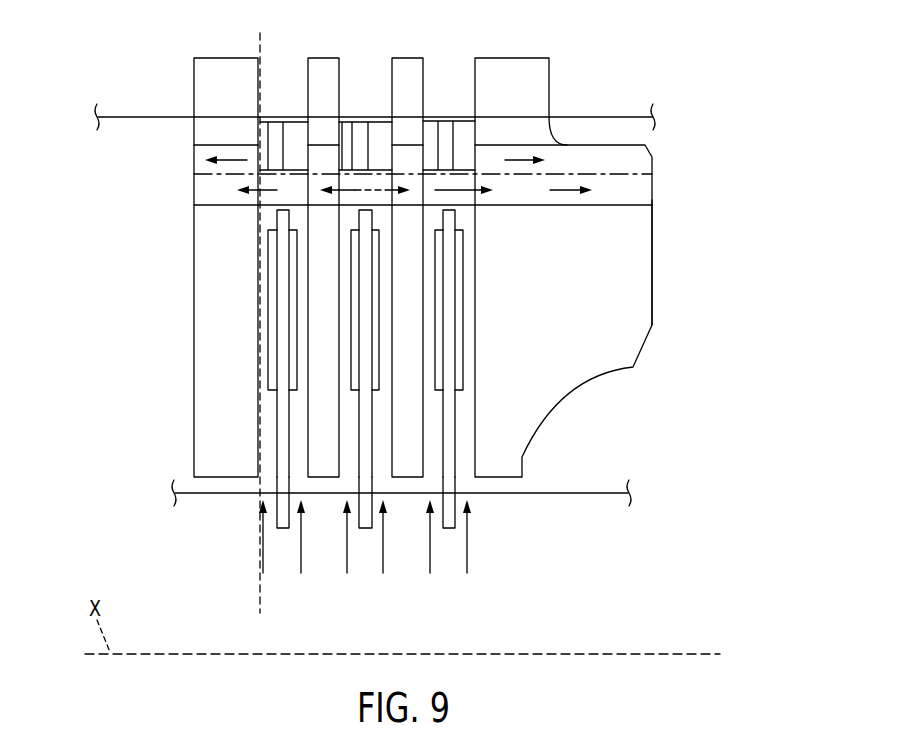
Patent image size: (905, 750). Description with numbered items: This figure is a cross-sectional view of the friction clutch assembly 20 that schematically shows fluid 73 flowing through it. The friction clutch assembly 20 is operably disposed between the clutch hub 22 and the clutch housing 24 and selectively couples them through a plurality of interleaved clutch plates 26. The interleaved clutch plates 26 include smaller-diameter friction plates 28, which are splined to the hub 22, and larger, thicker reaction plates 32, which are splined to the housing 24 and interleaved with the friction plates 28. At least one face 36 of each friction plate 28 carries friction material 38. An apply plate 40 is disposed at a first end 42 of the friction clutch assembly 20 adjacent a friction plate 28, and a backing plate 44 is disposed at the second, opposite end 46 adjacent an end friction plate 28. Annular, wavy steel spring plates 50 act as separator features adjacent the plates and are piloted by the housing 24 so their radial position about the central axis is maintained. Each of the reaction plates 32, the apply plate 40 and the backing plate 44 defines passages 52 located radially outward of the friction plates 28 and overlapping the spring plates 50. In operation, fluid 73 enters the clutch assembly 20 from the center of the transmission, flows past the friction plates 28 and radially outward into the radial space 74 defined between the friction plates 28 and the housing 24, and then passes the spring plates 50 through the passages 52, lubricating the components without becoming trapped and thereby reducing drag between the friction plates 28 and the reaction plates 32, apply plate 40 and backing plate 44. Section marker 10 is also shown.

The section line 10 is at (260, 33).
The friction clutch assembly 20 is at (403, 317).
The clutch hub 22 is at (590, 496).
The clutch housing 24 is at (625, 115).
The interleaved clutch plates 26 is at (166, 267).
The friction plates 28 is at (283, 472).
The reaction plates 32 is at (335, 64).
The face 36 is at (291, 220).
The friction material 38 is at (268, 333).
The apply plate 40 is at (204, 381).
The first end 42 is at (106, 182).
The backing plate 44 is at (643, 277).
The second end 46 is at (665, 351).
The spring plates 50 is at (296, 127).
The passages 52 is at (409, 160).
The fluid 73 is at (232, 157).
The radial space 74 is at (443, 190).